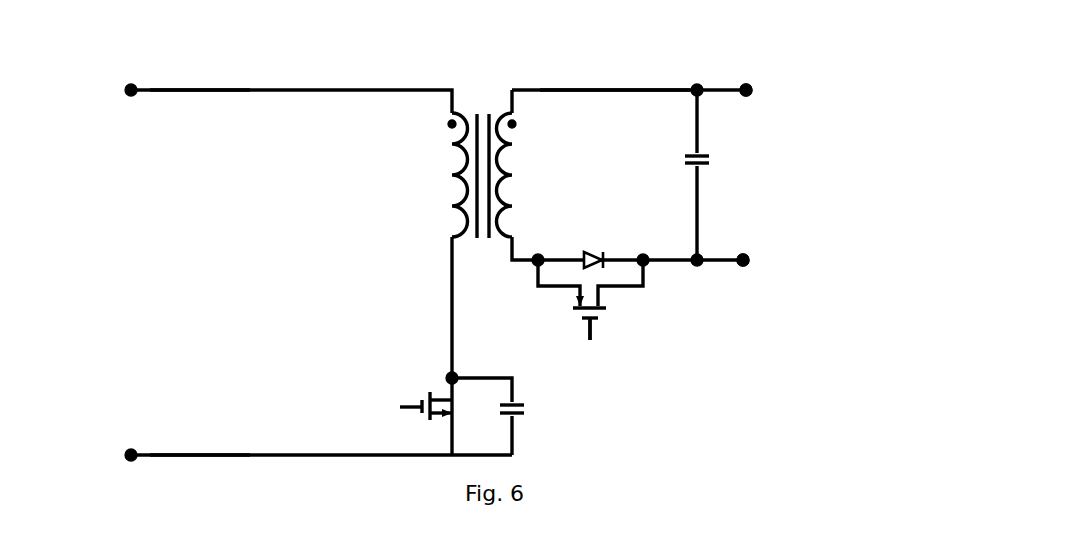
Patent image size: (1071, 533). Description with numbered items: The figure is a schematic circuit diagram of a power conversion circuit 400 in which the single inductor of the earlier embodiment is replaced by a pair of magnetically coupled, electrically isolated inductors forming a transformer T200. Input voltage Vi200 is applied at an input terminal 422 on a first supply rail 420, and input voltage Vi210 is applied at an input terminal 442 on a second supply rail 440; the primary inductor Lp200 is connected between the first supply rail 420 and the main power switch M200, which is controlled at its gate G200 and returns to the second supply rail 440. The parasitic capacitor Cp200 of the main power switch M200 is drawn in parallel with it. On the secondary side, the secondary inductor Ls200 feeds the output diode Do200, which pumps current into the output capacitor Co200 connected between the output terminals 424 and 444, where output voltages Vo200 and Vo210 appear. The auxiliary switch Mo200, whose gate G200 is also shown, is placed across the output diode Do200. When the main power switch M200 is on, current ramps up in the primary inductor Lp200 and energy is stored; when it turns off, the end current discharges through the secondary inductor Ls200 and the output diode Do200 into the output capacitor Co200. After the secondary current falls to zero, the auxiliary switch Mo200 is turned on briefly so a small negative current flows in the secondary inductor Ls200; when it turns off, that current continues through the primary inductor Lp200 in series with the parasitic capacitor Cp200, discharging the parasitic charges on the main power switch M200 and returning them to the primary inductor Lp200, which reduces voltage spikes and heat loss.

The power converter circuit 400 is at (74, 54).
The first supply rail 420 is at (578, 86).
The first input terminal 422 is at (136, 90).
The first output terminal 424 is at (752, 88).
The second supply rail 440 is at (333, 485).
The second input terminal 442 is at (128, 455).
The second output terminal 444 is at (745, 266).
The transformer T200 is at (484, 84).
The primary inductor Lp200 is at (441, 177).
The secondary inductor Ls200 is at (527, 177).
The output diode Do200 is at (594, 243).
The output capacitor Co200 is at (724, 162).
The auxiliary switch Mo200 is at (618, 296).
The main power switch M200 is at (430, 383).
The gate terminal G200 is at (394, 407).
The parasitic capacitor Cp200 is at (534, 411).
The first input voltage Vi200 is at (195, 98).
The second input voltage Vi210 is at (191, 448).
The first output voltage Vo200 is at (770, 93).
The second output voltage Vo210 is at (762, 260).